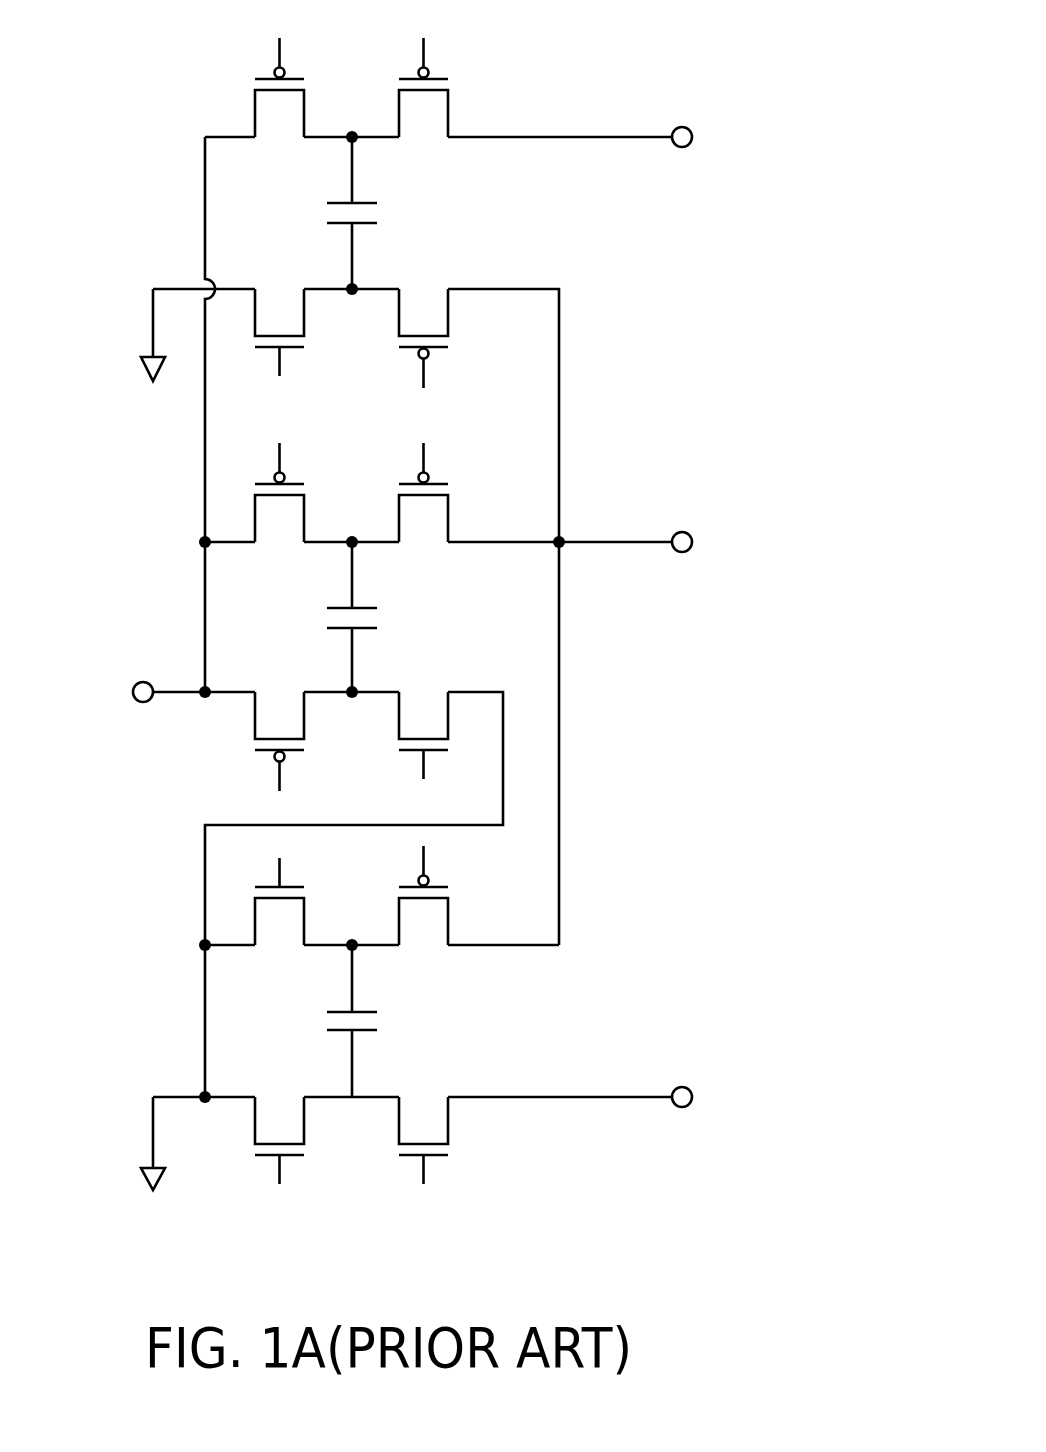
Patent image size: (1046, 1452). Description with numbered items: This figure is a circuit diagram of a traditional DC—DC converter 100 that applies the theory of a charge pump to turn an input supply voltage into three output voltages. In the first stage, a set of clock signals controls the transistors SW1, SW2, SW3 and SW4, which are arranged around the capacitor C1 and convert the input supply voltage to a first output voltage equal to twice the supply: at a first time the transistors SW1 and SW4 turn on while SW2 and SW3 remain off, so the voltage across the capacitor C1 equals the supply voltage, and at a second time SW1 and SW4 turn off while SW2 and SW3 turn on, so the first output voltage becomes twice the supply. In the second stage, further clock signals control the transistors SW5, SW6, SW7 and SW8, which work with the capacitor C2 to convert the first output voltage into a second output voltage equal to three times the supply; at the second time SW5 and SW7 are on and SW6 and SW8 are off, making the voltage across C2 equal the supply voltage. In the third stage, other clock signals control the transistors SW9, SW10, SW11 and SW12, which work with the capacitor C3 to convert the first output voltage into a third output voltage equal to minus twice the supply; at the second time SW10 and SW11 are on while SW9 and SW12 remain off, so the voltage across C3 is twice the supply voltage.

The DC—DC converter 100 is at (347, 1275).
The transistor SW1 is at (221, 427).
The transistor SW2 is at (407, 506).
The transistor SW3 is at (263, 735).
The transistor SW4 is at (407, 735).
The transistor SW5 is at (263, 102).
The transistor SW6 is at (364, 22).
The transistor SW7 is at (221, 368).
The transistor SW8 is at (365, 368).
The transistor SW9 is at (263, 911).
The transistor SW10 is at (413, 911).
The transistor SW11 is at (221, 1177).
The transistor SW12 is at (413, 1138).
The capacitor C1 is at (372, 619).
The capacitor C2 is at (372, 212).
The capacitor C3 is at (372, 1019).